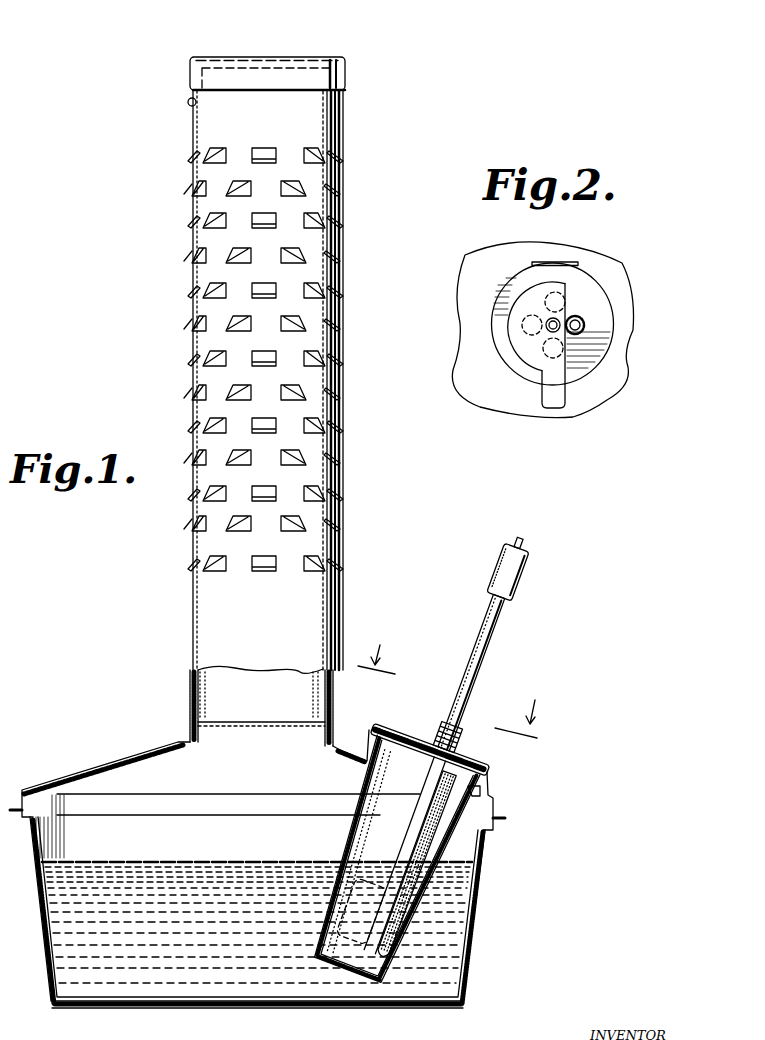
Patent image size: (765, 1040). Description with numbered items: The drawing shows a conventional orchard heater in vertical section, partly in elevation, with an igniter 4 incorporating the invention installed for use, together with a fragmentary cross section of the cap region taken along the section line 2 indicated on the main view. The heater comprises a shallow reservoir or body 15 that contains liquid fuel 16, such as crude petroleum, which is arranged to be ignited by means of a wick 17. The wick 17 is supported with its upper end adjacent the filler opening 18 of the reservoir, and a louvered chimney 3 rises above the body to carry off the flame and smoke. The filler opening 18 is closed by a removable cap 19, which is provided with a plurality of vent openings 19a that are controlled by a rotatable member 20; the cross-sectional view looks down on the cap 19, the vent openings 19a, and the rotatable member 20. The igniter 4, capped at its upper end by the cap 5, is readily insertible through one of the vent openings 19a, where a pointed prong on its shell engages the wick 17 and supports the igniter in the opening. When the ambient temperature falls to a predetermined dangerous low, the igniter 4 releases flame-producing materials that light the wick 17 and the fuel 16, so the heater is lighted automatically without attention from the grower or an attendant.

In FIG. 1, the section line of Fig. 2 is at (449, 680).
In FIG. 1, the louvered chimney 3 is at (264, 365).
In FIG. 1, the igniter 4 is at (504, 660).
In FIG. 2, the igniter 4 is at (599, 322).
In FIG. 1, the igniter rod cap 5 is at (480, 626).
In FIG. 2, the igniter rod cap 5 is at (590, 316).
In FIG. 1, the reservoir or body 15 is at (467, 938).
In FIG. 1, the liquid fuel 16 is at (457, 893).
In FIG. 1, the wick 17 is at (427, 857).
In FIG. 1, the filler opening 18 is at (473, 791).
In FIG. 1, the removable cap 19 is at (487, 773).
In FIG. 2, the removable cap 19 is at (498, 326).
In FIG. 1, the vent openings 19a is at (452, 760).
In FIG. 2, the vent openings 19a is at (582, 330).
In FIG. 1, the rotatable member 20 is at (406, 726).
In FIG. 2, the rotatable member 20 is at (525, 352).